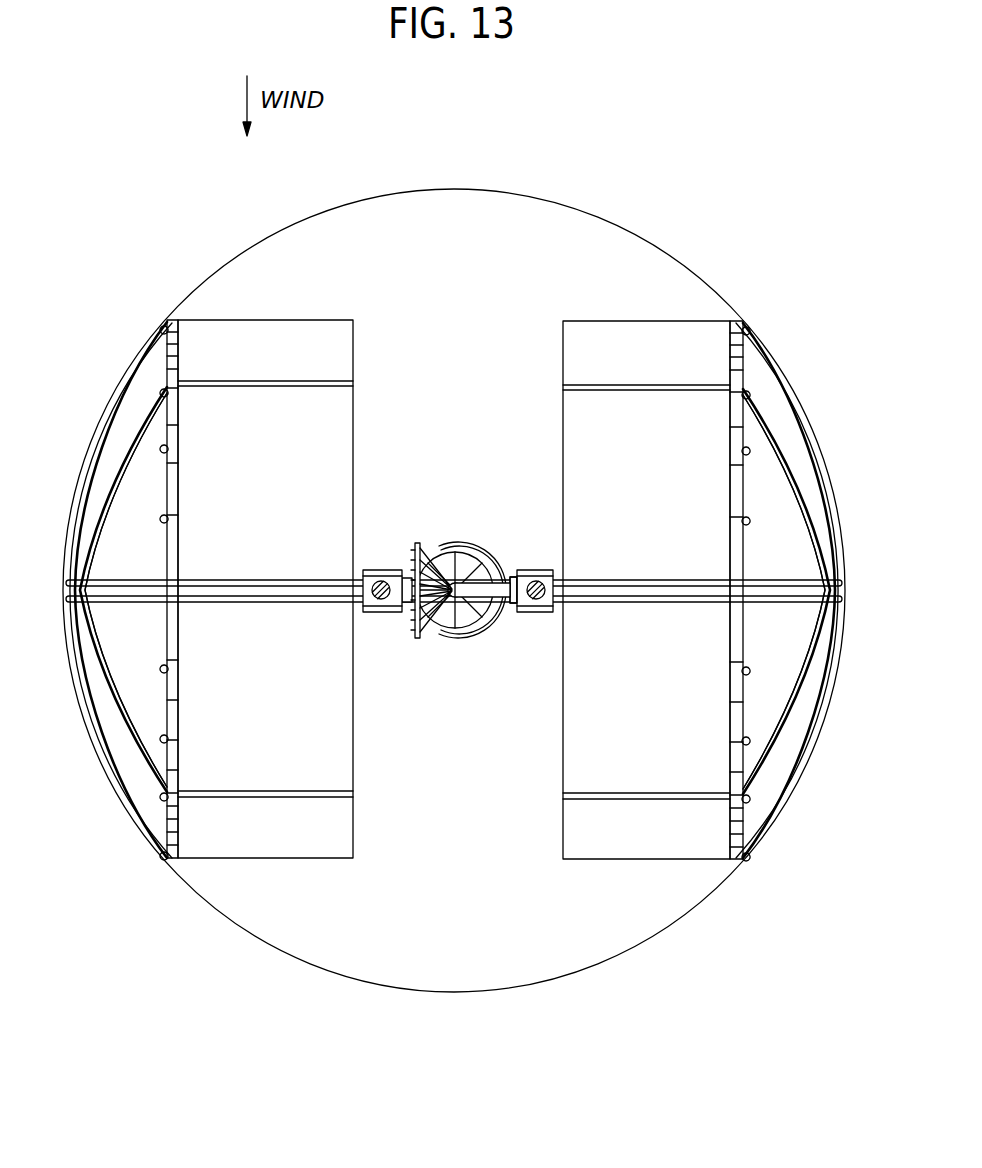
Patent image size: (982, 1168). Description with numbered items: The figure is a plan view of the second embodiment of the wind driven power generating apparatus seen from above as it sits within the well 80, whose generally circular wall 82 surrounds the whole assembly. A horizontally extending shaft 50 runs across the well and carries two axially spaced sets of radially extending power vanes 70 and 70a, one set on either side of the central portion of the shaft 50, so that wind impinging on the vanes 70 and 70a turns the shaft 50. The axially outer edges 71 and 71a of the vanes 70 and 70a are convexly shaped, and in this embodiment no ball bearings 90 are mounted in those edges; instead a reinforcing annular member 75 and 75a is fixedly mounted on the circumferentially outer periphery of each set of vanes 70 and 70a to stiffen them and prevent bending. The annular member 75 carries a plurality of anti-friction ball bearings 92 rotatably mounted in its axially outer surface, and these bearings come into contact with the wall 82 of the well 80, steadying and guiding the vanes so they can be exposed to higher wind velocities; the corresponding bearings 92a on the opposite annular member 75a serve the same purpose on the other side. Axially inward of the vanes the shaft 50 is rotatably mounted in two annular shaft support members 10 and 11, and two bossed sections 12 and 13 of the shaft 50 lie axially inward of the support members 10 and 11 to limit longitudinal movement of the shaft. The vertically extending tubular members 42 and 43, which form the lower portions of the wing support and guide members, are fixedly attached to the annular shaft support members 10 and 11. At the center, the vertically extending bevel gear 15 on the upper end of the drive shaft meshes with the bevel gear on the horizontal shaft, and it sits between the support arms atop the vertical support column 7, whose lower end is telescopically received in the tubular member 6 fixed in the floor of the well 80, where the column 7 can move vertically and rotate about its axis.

The tubular member 6 is at (451, 540).
The vertical support column 7 is at (450, 634).
The annular shaft support member 10 is at (367, 570).
The annular shaft support member 11 is at (533, 572).
The bossed section 12 is at (511, 574).
The bossed section 13 is at (404, 610).
The bevel gear 15 is at (467, 632).
The tubular member 42 is at (384, 574).
The tubular member 43 is at (538, 604).
The shaft 50 is at (303, 600).
The power vanes 70 is at (572, 402).
The power vanes 70a is at (356, 396).
The axially outer edge 71 is at (783, 437).
The axially outer edge 71a is at (147, 405).
The reinforcing annular member 75 is at (744, 321).
The reinforcing annular member 75a is at (175, 318).
The well 80 is at (362, 968).
The circular wall 82 is at (513, 983).
The ball bearings 90 is at (842, 600).
The ball bearings 92 is at (745, 793).
The stay 92a is at (165, 730).